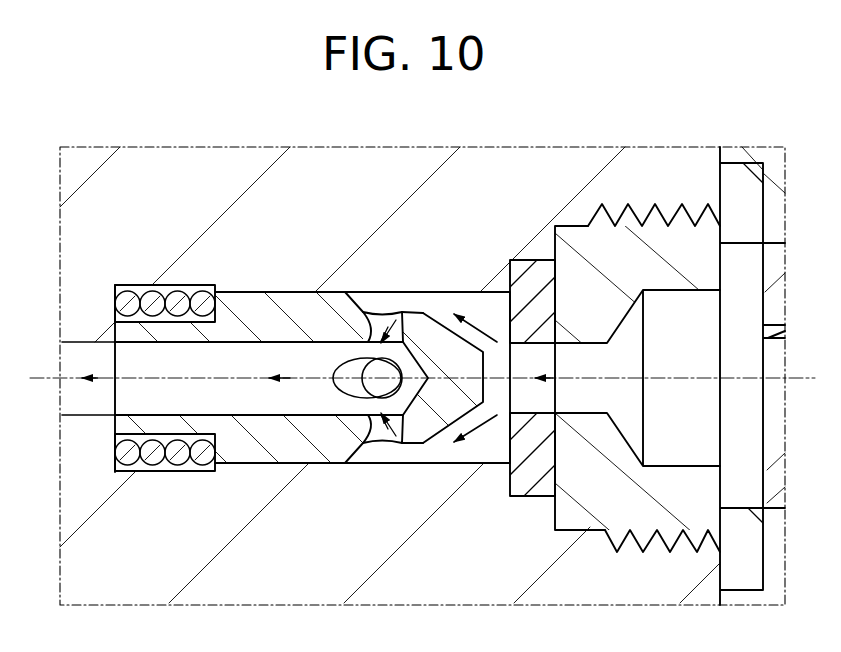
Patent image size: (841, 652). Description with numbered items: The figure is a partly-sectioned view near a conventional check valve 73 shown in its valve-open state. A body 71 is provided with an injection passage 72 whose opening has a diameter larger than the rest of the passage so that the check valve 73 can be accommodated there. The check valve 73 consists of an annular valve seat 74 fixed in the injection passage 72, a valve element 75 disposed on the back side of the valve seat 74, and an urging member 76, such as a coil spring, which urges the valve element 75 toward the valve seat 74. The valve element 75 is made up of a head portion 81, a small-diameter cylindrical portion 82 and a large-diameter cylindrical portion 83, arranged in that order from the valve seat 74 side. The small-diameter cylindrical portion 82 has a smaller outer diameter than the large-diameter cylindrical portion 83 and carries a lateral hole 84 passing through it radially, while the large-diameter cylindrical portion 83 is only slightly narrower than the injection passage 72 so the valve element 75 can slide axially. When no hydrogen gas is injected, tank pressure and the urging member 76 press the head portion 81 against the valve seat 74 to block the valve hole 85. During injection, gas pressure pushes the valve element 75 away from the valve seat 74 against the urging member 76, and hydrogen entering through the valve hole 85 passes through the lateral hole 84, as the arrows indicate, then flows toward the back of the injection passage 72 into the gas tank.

The body 71 is at (94, 152).
The injection passage 72 is at (82, 406).
The check valve 73 is at (90, 280).
The valve seat 74 is at (516, 262).
The valve element 75 is at (292, 292).
The urging member 76 is at (145, 285).
The head portion 81 is at (440, 432).
The small-diameter cylindrical portion 82 is at (405, 444).
The large-diameter cylindrical portion 83 is at (250, 463).
The lateral hole 84 is at (365, 444).
The valve hole 85 is at (543, 412).